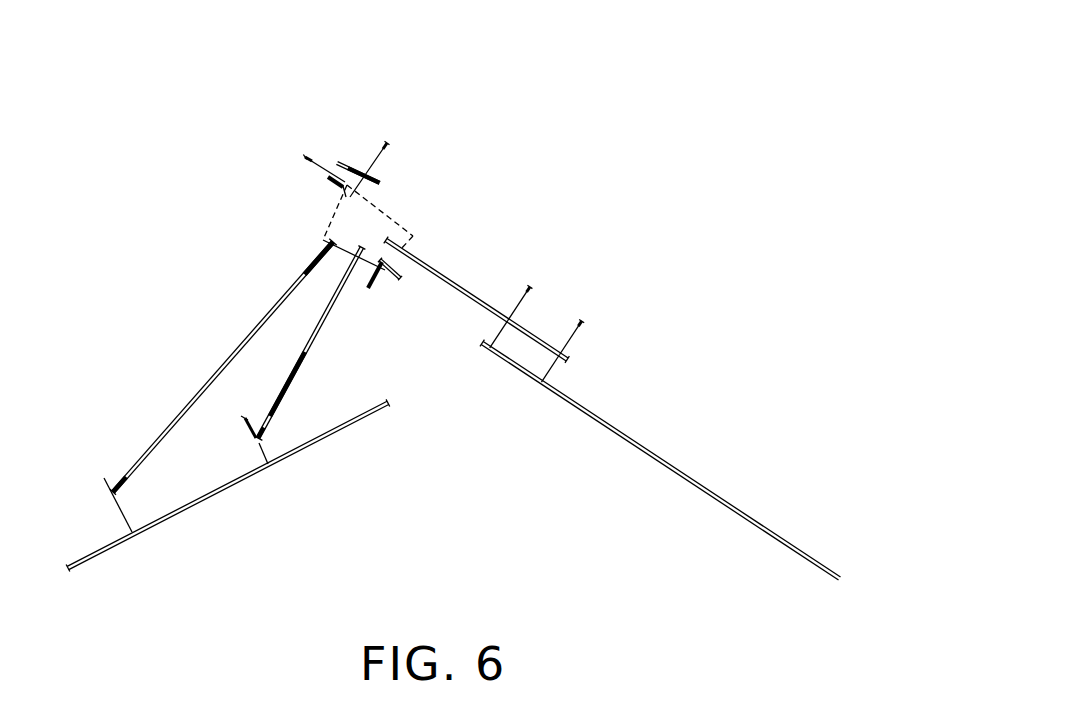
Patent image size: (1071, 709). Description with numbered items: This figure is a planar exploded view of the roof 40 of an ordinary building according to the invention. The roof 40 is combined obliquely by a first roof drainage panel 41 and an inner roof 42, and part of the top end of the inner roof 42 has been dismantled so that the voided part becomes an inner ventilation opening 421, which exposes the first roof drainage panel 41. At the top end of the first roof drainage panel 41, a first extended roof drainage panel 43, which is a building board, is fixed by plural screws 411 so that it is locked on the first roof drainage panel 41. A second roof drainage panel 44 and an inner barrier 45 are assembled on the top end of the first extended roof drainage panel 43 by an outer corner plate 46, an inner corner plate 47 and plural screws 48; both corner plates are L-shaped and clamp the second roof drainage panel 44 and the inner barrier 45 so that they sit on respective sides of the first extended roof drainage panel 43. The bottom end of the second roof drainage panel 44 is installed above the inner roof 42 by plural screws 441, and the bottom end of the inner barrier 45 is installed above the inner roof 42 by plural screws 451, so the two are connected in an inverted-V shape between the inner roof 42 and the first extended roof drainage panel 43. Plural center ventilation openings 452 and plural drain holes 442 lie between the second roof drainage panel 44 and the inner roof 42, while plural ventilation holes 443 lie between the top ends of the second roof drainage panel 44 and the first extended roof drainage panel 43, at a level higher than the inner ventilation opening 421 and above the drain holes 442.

The roof 40 is at (683, 240).
The first roof drainage panel 41 is at (666, 458).
The screws 411 is at (583, 321).
The inner roof 42 is at (190, 508).
The inner ventilation opening 421 is at (447, 382).
The first extended roof drainage panel 43 is at (463, 283).
The second roof drainage panel 44 is at (215, 377).
The screws 441 is at (100, 470).
The drain holes 442 is at (118, 478).
The ventilation holes 443 is at (312, 270).
The inner barrier 45 is at (318, 332).
The screws 451 is at (245, 418).
The center ventilation openings 452 is at (265, 432).
The outer corner plate 46 is at (352, 165).
The inner corner plate 47 is at (393, 282).
The screws 48 is at (389, 145).